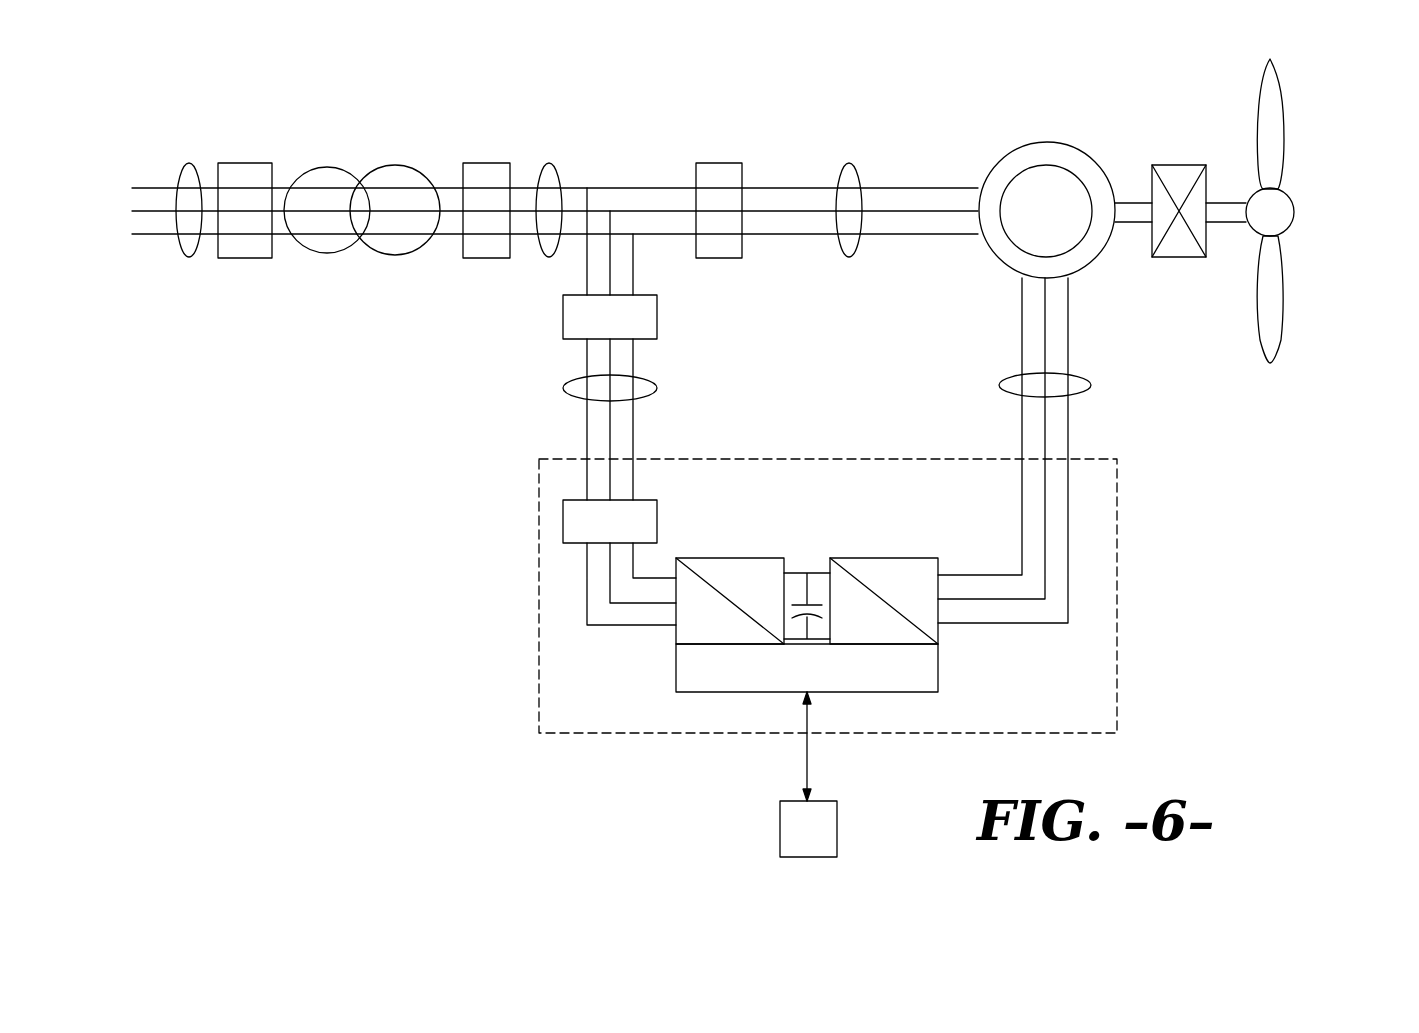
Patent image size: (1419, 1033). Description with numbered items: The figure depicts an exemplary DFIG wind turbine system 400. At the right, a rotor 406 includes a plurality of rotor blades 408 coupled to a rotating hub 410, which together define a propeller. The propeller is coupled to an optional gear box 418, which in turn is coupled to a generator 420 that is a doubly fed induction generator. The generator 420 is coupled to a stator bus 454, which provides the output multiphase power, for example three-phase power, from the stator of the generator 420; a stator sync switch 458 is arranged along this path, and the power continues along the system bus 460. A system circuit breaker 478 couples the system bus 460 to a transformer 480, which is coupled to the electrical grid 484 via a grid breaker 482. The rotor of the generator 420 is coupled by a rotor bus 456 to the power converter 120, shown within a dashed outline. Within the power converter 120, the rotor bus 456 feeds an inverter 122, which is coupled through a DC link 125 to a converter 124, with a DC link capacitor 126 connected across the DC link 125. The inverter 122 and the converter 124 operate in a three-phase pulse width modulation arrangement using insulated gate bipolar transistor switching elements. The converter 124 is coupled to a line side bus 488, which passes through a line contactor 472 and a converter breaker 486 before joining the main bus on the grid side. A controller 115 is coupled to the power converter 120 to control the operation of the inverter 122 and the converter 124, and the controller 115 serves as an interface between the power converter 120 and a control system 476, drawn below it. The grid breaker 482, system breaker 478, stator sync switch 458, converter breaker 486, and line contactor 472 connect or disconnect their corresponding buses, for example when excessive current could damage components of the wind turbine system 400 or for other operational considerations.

The electrical grid 484 is at (189, 163).
The grid breaker 482 is at (240, 163).
The transformer 480 is at (395, 165).
The system circuit breaker 478 is at (483, 163).
The system bus 460 is at (549, 163).
The stator sync switch 458 is at (717, 163).
The stator bus 454 is at (849, 163).
The doubly fed induction generator 420 is at (1040, 143).
The gear box 418 is at (1180, 165).
The rotor 406 is at (1318, 115).
The rotor blades 408 is at (1288, 136).
The rotating hub 410 is at (1297, 203).
The converter breaker 486 is at (563, 320).
The line side bus 488 is at (566, 388).
The rotor bus 456 is at (1093, 385).
The line contactor 472 is at (563, 525).
The power converter 120 is at (1117, 562).
The DC link capacitor 126 is at (793, 603).
The DC link 125 is at (815, 570).
The converter 124 is at (676, 633).
The inverter 122 is at (938, 637).
The controller 115 is at (723, 693).
The control system 476 is at (837, 823).
The DFIG wind turbine system 400 is at (408, 577).